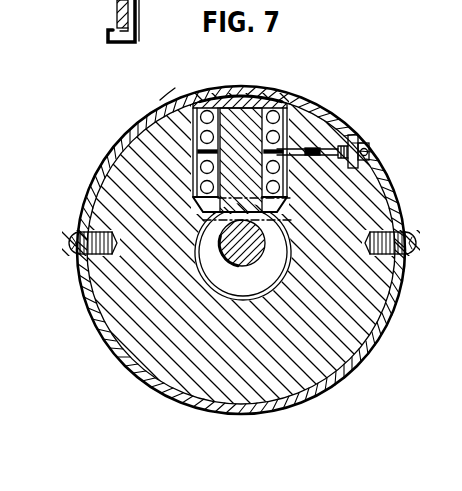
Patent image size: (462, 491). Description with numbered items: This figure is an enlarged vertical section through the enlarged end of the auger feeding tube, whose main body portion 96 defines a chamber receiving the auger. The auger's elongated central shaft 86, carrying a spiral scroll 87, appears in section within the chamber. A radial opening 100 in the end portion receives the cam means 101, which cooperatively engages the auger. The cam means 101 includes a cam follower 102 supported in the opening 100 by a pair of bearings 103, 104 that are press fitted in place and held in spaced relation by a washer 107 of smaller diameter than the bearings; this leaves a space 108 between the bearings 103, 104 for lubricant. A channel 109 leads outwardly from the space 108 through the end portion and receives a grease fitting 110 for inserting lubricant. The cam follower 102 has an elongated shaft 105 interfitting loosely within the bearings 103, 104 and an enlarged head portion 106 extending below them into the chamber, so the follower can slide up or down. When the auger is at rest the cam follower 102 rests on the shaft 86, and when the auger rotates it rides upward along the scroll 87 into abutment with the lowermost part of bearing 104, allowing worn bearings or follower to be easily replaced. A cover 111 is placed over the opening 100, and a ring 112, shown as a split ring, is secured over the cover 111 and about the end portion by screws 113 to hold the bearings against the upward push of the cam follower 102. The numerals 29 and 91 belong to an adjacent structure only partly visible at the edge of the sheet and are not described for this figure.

The bracket member 29 is at (112, 5).
The mounting flange 91 is at (112, 40).
The main body portion 96 is at (340, 366).
The cam means 101 is at (166, 94).
The cover 111 is at (257, 102).
The bearing 103 is at (288, 122).
The space 108 is at (287, 149).
The channel 109 is at (330, 150).
The grease fitting 110 is at (369, 150).
The bearing 104 is at (288, 178).
The head portion 106 is at (293, 210).
The opening 100 is at (197, 127).
The washer 107 is at (194, 142).
The shaft 105 is at (196, 183).
The cam follower 102 is at (197, 208).
The spiral scroll 87 is at (219, 268).
The central shaft 86 is at (246, 252).
The screws 113 is at (66, 243).
The ring 112 is at (400, 298).